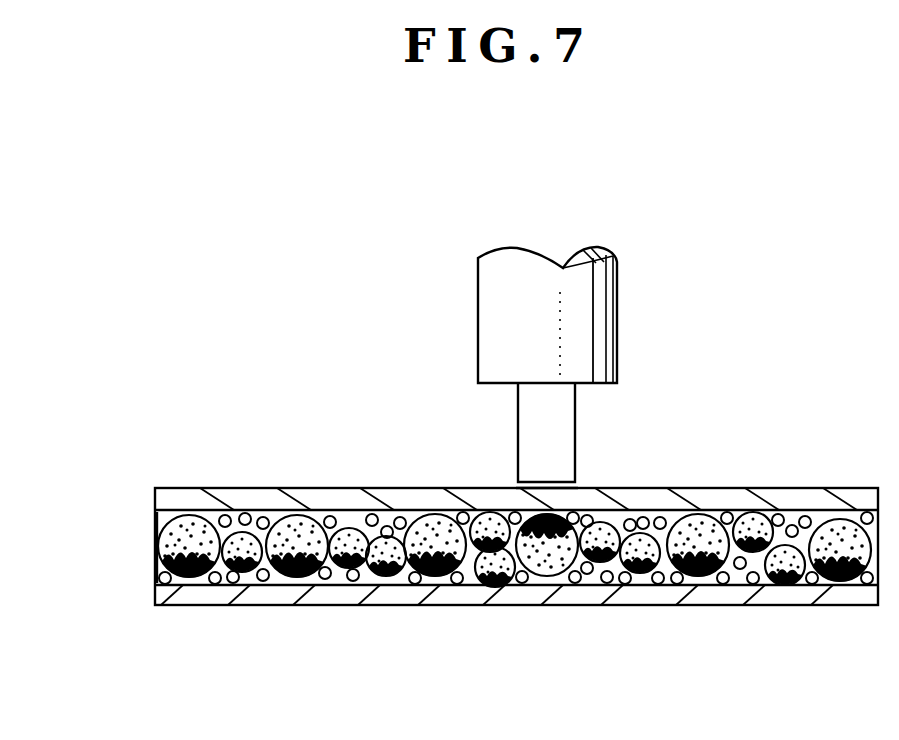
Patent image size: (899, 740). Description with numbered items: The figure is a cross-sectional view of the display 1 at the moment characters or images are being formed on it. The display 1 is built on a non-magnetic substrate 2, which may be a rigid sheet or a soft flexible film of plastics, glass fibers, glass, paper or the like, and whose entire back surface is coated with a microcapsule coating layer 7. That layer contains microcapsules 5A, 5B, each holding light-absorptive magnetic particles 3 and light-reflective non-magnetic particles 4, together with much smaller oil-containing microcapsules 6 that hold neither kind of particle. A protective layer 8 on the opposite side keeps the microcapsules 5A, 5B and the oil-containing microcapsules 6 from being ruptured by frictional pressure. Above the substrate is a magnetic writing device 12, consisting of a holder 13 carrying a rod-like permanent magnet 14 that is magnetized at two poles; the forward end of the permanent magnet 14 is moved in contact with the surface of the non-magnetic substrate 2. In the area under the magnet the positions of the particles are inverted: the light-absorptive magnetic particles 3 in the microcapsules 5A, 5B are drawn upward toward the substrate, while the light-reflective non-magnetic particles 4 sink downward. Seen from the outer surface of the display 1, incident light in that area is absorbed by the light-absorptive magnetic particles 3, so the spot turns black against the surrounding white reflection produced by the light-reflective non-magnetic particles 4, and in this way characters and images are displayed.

The display 1 is at (751, 478).
The non-magnetic substrate 2 is at (298, 505).
The light-absorptive magnetic particles 3 is at (556, 484).
The light-reflective non-magnetic particles 4 is at (575, 582).
The microcapsules 5A is at (420, 515).
The microcapsules 5B is at (628, 487).
The oil-containing microcapsules 6 is at (225, 515).
The microcapsule coating layer 7 is at (163, 518).
The protective layer 8 is at (267, 607).
The bonding tool head 12 is at (627, 288).
The holder 13 is at (595, 353).
The rod-like permanent magnet 14 is at (553, 420).